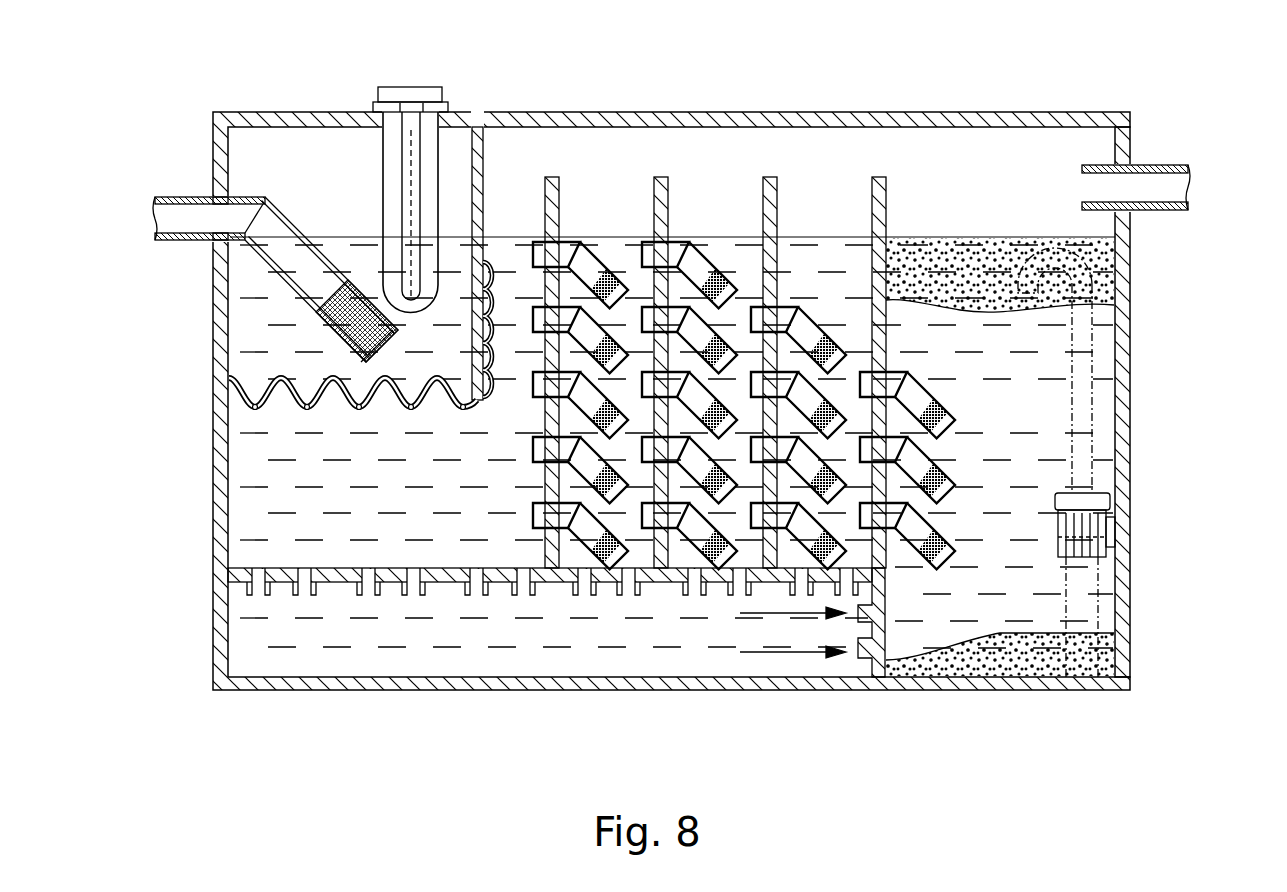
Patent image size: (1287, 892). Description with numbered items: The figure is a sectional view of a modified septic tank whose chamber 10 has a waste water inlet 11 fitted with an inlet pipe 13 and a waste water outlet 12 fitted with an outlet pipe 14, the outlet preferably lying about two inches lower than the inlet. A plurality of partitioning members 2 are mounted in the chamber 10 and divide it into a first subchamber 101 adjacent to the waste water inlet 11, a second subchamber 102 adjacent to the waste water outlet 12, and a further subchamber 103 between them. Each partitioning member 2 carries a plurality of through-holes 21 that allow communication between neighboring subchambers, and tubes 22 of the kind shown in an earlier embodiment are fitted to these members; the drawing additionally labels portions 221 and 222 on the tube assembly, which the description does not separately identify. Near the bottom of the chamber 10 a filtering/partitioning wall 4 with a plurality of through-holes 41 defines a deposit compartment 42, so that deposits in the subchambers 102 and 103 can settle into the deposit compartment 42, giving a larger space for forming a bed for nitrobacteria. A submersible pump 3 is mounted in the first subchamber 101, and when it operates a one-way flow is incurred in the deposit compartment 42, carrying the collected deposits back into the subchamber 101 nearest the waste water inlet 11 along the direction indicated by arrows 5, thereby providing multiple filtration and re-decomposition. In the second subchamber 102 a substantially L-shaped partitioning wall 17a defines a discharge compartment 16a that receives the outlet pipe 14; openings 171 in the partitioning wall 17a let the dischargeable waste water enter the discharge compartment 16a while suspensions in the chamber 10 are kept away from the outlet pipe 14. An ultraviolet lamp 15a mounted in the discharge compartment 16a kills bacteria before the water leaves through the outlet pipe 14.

The chamber 10 is at (922, 147).
The waste water inlet 11 is at (1128, 213).
The waste water outlet 12 is at (218, 240).
The inlet pipe 13 is at (1163, 165).
The outlet pipe 14 is at (178, 198).
The ultraviolet lamp 15a is at (397, 93).
The discharge compartment 16a is at (333, 247).
The L-shaped partitioning wall 17a is at (473, 167).
The openings 171 is at (488, 270).
The partitioning member 2 is at (552, 177).
The through-holes 21 is at (778, 307).
The tubes 22 is at (688, 210).
The nozzle body 221 is at (647, 240).
The nozzle screen 222 is at (712, 262).
The submersible pump 3 is at (1087, 569).
The filtering/partitioning wall 4 is at (552, 577).
The through-holes 41 is at (585, 585).
The deposit compartment 42 is at (390, 650).
The arrows 5 is at (805, 655).
The first subchamber 101 is at (1102, 258).
The second subchamber 102 is at (295, 508).
The subchamber 103 is at (642, 552).